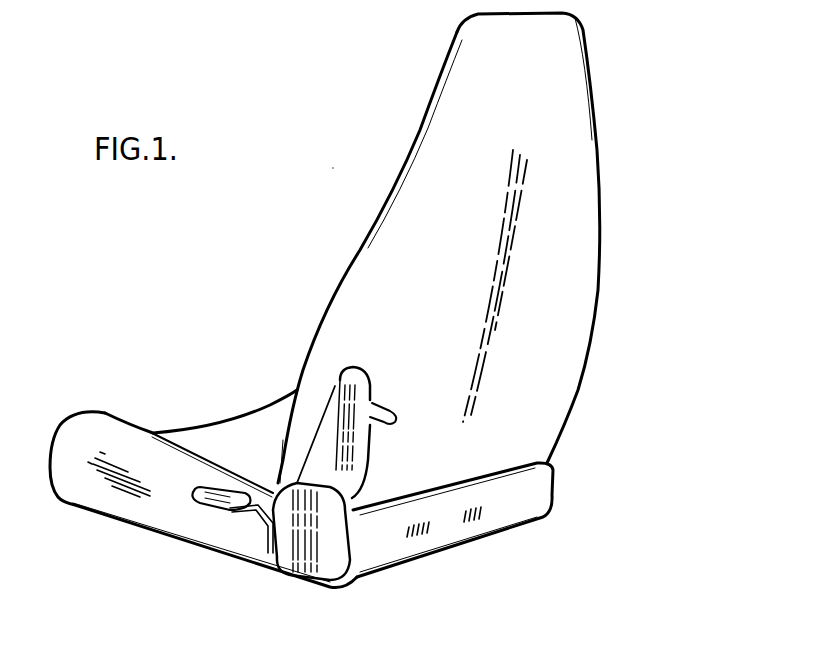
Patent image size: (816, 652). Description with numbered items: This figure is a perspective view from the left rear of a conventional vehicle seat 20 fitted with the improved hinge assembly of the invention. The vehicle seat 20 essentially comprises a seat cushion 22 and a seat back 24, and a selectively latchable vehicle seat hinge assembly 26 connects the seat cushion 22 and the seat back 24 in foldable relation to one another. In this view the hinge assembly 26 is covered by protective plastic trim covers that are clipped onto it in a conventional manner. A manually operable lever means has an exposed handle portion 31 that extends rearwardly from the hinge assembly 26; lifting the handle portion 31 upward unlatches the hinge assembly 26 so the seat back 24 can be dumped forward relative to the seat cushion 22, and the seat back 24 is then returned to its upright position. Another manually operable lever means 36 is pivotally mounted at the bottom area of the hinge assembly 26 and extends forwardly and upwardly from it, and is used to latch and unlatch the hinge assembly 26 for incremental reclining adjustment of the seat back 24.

The vehicle seat 20 is at (333, 168).
The seat cushion 22 is at (217, 423).
The seat back 24 is at (580, 173).
The vehicle seat hinge assembly 26 is at (303, 432).
The handle portion 31 is at (387, 413).
The manually operable lever means 36 is at (252, 528).